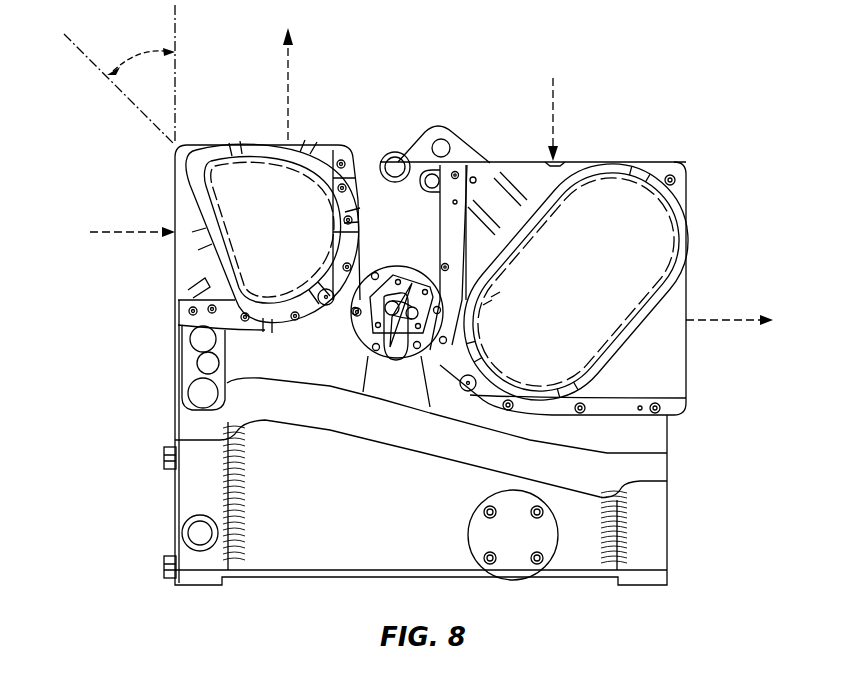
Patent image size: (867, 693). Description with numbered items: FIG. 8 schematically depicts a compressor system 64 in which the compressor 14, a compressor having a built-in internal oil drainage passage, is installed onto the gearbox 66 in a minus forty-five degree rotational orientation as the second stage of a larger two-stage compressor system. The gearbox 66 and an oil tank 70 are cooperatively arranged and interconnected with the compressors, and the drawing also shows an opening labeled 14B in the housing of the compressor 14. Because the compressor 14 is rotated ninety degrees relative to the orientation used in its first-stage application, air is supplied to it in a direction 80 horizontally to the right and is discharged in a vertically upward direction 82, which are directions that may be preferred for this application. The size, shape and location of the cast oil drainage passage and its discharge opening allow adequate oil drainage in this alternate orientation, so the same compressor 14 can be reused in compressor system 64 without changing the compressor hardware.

The compressor 14 is at (278, 247).
The second heat exchanger opening / housing 14B is at (578, 304).
The compressor system 64 is at (680, 66).
The gearbox 66 is at (440, 126).
The oil tank 70 is at (360, 514).
The direction 80 is at (112, 234).
The direction 82 is at (283, 107).